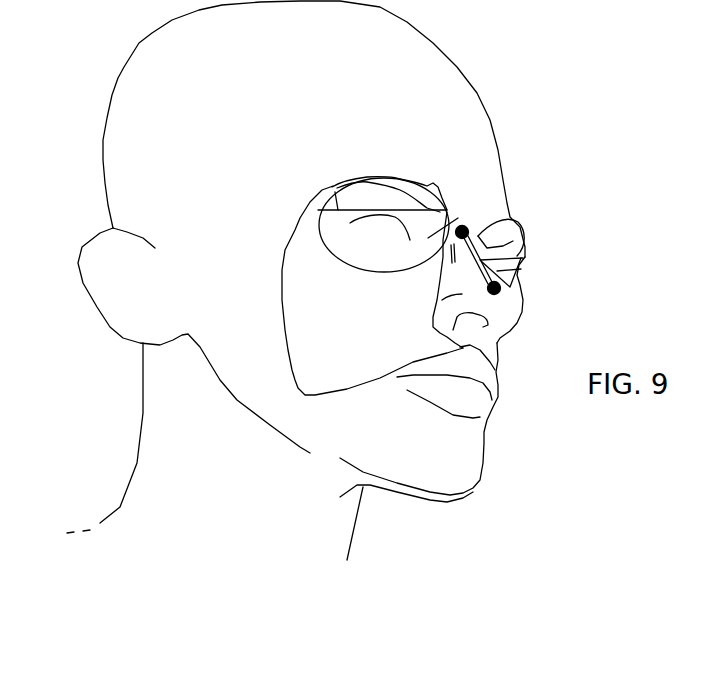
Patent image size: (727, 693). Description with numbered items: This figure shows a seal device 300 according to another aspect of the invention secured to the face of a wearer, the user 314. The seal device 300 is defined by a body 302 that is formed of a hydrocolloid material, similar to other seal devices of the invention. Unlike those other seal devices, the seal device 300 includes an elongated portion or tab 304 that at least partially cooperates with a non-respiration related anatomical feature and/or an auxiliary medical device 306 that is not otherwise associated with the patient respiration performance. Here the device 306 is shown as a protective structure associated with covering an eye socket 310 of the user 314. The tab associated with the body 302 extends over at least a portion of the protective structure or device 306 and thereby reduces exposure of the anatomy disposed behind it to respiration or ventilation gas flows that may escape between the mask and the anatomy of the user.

The user 314 is at (398, 76).
The body 302 is at (374, 325).
The seal device 300 is at (320, 150).
The elongated portion or tab 304 is at (332, 185).
The auxiliary medical device 306 is at (366, 199).
The eye socket 310 is at (452, 224).